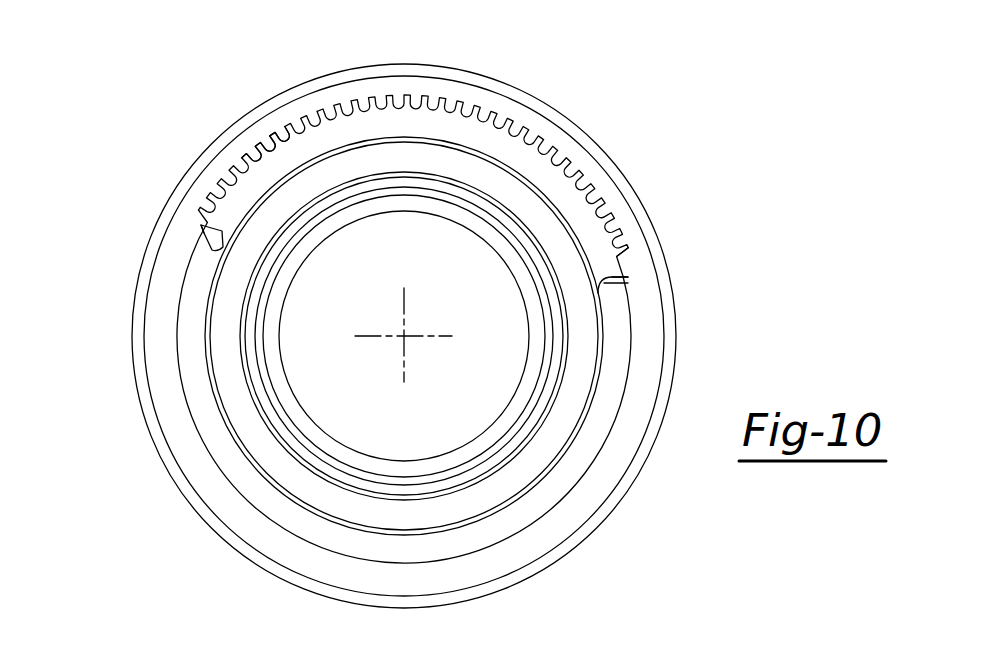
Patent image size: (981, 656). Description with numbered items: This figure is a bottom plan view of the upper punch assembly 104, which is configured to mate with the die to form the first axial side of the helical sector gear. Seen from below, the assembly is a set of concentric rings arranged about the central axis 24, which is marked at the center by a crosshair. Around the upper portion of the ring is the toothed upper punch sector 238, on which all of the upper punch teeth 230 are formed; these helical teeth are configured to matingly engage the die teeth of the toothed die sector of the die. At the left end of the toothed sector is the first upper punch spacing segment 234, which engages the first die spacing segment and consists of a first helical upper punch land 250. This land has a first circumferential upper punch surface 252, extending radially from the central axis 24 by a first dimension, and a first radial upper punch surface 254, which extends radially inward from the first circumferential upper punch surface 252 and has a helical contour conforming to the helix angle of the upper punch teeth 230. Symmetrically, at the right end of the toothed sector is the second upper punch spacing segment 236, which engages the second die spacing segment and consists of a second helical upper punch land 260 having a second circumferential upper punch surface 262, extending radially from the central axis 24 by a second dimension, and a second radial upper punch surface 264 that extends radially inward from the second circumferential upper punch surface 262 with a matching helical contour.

The upper punch assembly 104 is at (615, 102).
The toothed upper punch sector 238 is at (327, 103).
The upper punch teeth 230 is at (248, 148).
The first helical upper punch land 250 is at (222, 215).
The first circumferential upper punch surface 252 is at (205, 225).
The first upper punch spacing segment 234 is at (205, 238).
The first radial upper punch surface 254 is at (213, 255).
The second helical upper punch land 260 is at (613, 262).
The second upper punch spacing segment 236 is at (632, 263).
The second circumferential upper punch surface 262 is at (628, 277).
The second radial upper punch surface 264 is at (617, 283).
The central axis 24 is at (407, 340).